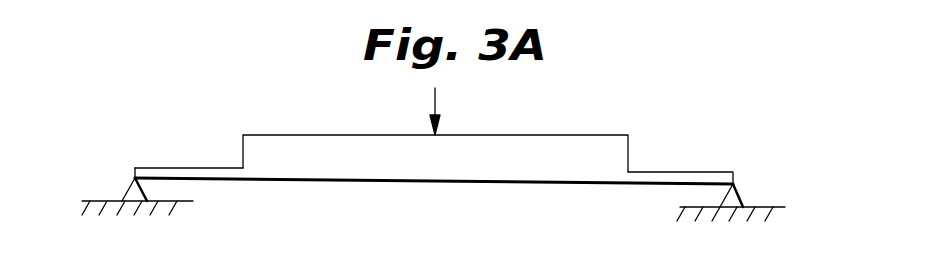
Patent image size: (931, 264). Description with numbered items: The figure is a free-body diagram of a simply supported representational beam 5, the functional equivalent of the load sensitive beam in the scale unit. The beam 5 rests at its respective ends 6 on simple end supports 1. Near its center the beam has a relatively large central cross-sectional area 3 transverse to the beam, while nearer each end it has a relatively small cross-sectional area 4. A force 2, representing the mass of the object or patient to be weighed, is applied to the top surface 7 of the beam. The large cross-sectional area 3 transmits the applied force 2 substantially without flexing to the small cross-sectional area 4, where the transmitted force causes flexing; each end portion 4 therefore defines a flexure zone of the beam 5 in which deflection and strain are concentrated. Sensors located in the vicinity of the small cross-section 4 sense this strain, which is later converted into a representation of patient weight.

The simple end supports 1 is at (133, 193).
The force 2 is at (438, 100).
The large central cross-sectional area 3 is at (450, 172).
The small cross-sectional area 4 is at (203, 176).
The representational beam 5 is at (588, 120).
The ends 6 is at (133, 175).
The top surface 7 is at (305, 135).